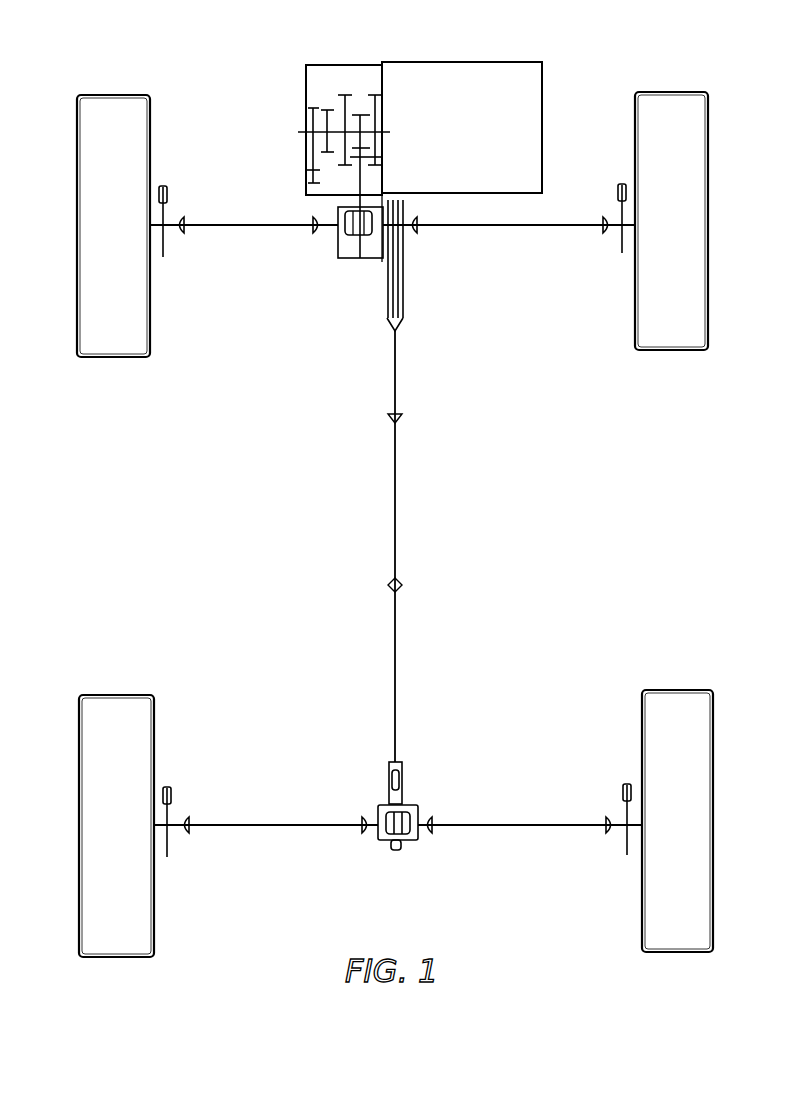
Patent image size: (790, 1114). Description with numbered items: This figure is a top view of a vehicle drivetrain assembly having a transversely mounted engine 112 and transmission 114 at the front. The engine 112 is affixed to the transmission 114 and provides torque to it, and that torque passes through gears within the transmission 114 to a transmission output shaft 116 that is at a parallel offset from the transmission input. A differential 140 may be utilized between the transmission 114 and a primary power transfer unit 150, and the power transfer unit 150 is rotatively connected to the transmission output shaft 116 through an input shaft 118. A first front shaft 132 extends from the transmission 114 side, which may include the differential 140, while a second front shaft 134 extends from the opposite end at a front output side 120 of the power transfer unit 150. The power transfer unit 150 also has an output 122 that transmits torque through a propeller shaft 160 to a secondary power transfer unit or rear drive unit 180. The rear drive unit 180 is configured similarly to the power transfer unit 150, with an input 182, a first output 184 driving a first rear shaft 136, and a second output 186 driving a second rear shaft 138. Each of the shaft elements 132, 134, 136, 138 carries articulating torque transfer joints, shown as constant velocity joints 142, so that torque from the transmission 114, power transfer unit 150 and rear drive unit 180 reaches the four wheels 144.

The engine 112 is at (459, 60).
The transmission 114 is at (318, 141).
The transmission output shaft 116 is at (305, 134).
The input shaft 118 is at (375, 262).
The front output side 120 is at (413, 207).
The output 122 is at (402, 322).
The first front shaft 132 is at (253, 228).
The second front shaft 134 is at (548, 222).
The first rear shaft 136 is at (278, 823).
The second rear shaft 138 is at (535, 828).
The differential 140 is at (335, 240).
The constant velocity joints 142 is at (312, 220).
The wheels 144 is at (130, 95).
The primary power transfer unit 150 is at (418, 251).
The propeller shaft 160 is at (397, 460).
The rear drive unit 180 is at (389, 806).
The input 182 is at (410, 757).
The first output 184 is at (378, 847).
The second output 186 is at (420, 845).